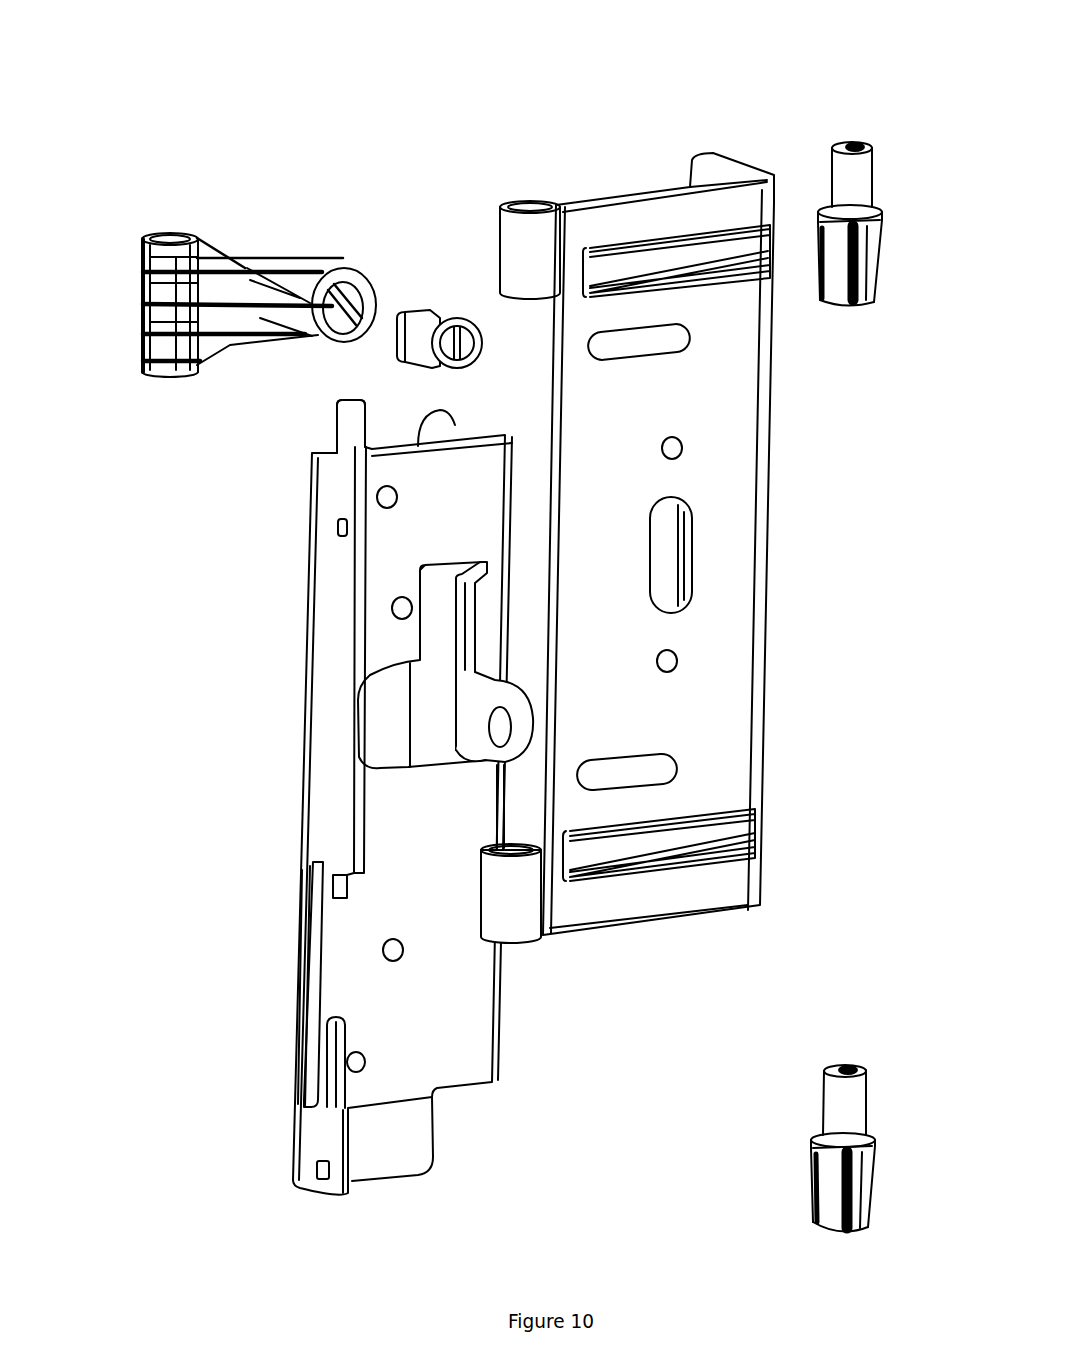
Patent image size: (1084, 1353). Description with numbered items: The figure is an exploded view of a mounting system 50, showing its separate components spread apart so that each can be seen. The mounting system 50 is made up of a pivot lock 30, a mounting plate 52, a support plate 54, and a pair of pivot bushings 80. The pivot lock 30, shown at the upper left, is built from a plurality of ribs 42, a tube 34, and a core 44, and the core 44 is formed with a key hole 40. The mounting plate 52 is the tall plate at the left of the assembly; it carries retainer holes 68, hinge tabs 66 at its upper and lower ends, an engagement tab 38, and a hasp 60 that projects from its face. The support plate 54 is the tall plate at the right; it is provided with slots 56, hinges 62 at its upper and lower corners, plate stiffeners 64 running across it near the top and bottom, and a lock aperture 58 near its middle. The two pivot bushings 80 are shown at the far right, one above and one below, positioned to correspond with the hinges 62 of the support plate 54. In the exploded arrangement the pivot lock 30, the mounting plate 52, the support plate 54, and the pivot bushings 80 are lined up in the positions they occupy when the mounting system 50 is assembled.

The pivot lock 30 is at (140, 205).
The tube 34 is at (155, 358).
The engagement tab 38 is at (325, 882).
The key hole 40 is at (456, 322).
The ribs 42 is at (280, 332).
The core 44 is at (408, 279).
The mounting system 50 is at (361, 123).
The mounting plate 52 is at (461, 1123).
The support plate 54 is at (707, 945).
The slots 56 is at (655, 349).
The lock aperture 58 is at (668, 552).
The hasp 60 is at (478, 720).
The hinges 62 is at (522, 222).
The plate stiffeners 64 is at (688, 265).
The hinge tabs 66 is at (340, 420).
The retainer holes 68 is at (336, 535).
The pivot bushings 80 is at (860, 1032).